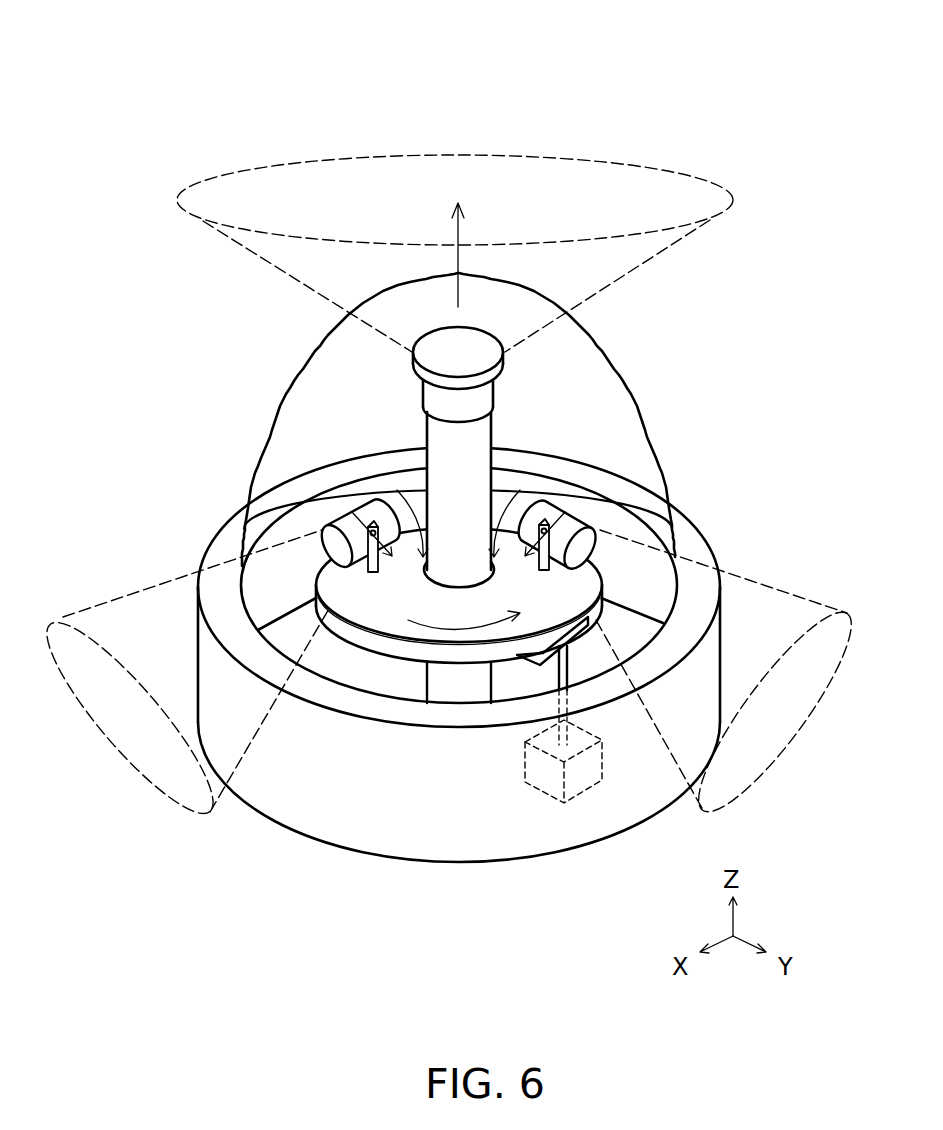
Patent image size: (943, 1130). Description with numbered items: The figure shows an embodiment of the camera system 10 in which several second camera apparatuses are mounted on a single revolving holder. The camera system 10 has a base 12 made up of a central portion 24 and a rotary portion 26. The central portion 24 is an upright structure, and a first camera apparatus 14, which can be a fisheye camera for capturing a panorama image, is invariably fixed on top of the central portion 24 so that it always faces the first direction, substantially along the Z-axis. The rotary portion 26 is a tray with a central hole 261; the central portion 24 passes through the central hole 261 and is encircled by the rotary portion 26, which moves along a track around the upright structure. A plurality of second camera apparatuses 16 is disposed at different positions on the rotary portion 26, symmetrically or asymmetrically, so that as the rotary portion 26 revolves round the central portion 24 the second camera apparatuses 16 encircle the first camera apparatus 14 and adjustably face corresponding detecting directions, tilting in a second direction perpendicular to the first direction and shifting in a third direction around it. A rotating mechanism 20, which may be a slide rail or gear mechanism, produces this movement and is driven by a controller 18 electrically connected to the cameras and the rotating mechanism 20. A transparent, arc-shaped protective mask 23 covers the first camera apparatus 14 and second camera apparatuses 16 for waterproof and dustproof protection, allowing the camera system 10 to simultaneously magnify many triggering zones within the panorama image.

The camera system 10 is at (449, 459).
The base 12 is at (298, 808).
The first camera apparatus 14 is at (500, 368).
The second camera apparatus 16 is at (360, 510).
The controller 18 is at (587, 788).
The rotating mechanism 20 is at (522, 666).
The protective mask 23 is at (297, 402).
The central portion 24 is at (438, 433).
The rotary portion 26 is at (380, 612).
The central hole 261 is at (372, 524).